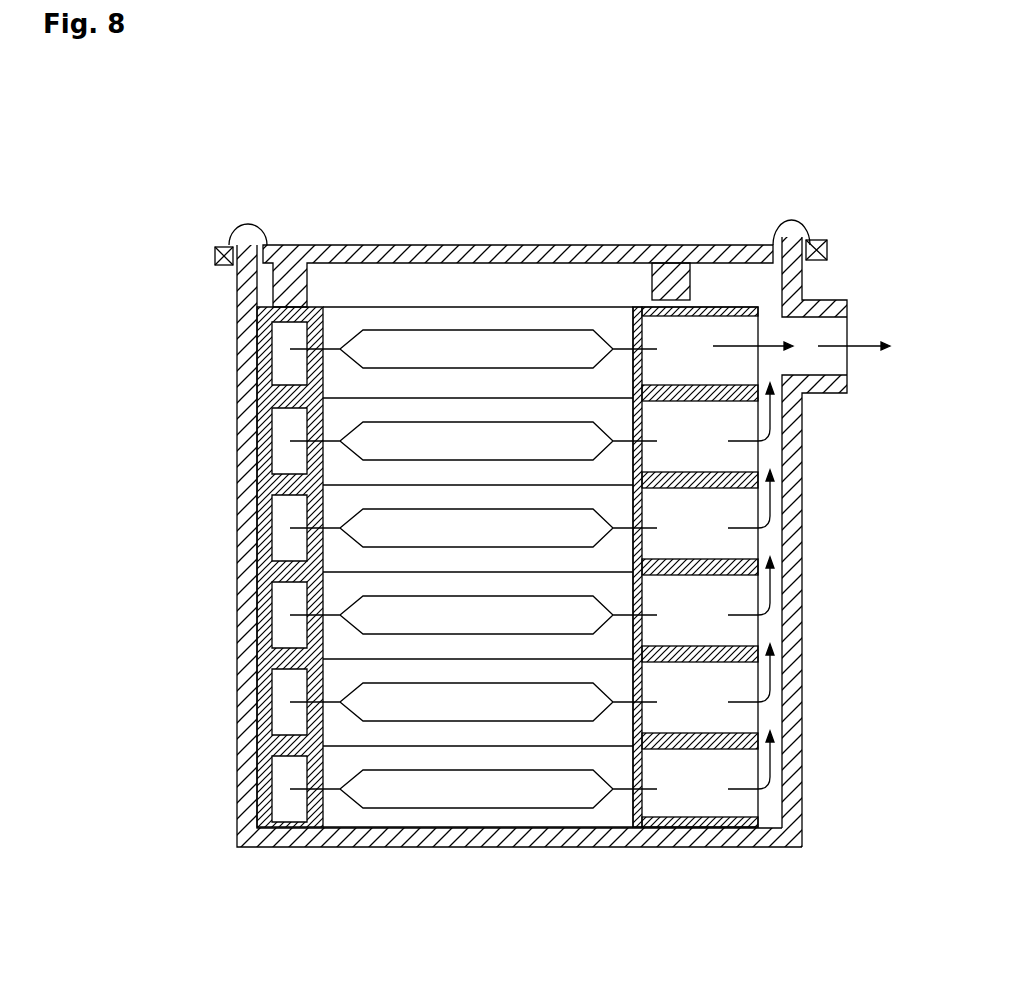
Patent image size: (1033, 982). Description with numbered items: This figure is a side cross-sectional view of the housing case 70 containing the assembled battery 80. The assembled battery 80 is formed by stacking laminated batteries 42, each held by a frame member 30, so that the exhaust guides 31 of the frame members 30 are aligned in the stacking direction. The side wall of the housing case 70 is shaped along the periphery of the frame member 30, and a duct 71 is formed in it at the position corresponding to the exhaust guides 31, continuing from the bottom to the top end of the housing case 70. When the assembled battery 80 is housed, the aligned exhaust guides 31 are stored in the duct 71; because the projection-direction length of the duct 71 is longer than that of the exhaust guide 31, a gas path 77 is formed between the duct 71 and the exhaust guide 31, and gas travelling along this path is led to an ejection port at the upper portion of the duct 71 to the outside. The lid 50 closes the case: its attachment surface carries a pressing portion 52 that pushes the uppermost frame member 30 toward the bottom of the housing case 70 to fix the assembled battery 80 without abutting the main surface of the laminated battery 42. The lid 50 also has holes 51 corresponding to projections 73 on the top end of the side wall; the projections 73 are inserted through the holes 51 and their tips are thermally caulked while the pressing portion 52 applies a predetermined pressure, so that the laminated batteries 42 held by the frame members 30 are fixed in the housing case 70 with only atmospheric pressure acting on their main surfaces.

The frame member 30 is at (313, 307).
The exhaust guide 31 is at (728, 305).
The laminated battery 42 is at (490, 340).
The lid 50 is at (583, 245).
The hole 51 is at (825, 240).
The pressing portion 52 is at (670, 245).
The housing case 70 is at (507, 535).
The duct 71 is at (790, 620).
The projection 73 is at (795, 235).
The gas path 77 is at (772, 810).
The assembled battery 80 is at (404, 300).